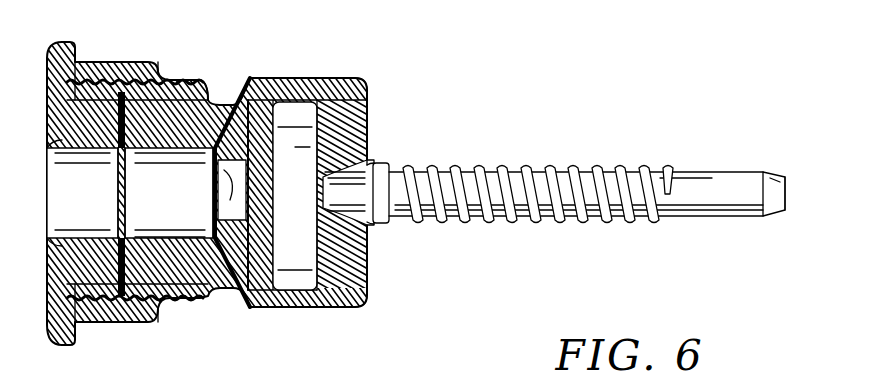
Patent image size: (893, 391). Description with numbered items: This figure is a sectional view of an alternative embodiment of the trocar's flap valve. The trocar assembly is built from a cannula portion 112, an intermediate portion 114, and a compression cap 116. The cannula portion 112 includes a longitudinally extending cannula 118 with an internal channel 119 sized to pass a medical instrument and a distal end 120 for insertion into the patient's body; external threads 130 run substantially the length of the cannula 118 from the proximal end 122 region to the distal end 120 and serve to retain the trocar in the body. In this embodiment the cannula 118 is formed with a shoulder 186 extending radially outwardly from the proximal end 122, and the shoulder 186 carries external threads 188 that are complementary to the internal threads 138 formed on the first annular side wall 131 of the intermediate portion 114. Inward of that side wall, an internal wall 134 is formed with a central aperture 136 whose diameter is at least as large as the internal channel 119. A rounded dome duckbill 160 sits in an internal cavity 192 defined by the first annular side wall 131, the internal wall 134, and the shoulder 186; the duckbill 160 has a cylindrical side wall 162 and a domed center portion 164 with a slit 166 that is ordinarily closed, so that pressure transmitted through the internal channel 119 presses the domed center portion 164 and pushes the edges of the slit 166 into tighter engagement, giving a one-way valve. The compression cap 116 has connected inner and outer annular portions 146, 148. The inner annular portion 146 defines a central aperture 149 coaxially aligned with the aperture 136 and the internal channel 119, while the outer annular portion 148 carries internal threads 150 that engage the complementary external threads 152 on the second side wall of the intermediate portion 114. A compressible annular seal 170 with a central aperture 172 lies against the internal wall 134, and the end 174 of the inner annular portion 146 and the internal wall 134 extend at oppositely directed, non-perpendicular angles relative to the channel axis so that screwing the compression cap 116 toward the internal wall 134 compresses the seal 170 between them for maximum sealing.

The cannula portion 112 is at (605, 166).
The intermediate portion 114 is at (227, 84).
The compression cap 116 is at (80, 57).
The cannula 118 is at (737, 170).
The internal channel 119 is at (355, 200).
The distal end 120 is at (784, 218).
The proximal end 122 is at (389, 228).
The external threads 130 is at (492, 170).
The first annular side wall 131 is at (278, 78).
The internal wall 134 is at (220, 270).
The central aperture 136 is at (227, 172).
The internal threads 138 is at (367, 107).
The inner annular portion 146 is at (87, 140).
The outer annular portion 148 is at (105, 316).
The central aperture 149 is at (88, 240).
The internal threads 150 is at (126, 66).
The external threads 152 is at (180, 84).
The rounded dome duckbill 160 is at (310, 290).
The cylindrical side wall 162 is at (292, 100).
The domed center portion 164 is at (364, 141).
The slit 166 is at (278, 175).
The compressible annular seal 170 is at (175, 278).
The central aperture 172 is at (138, 234).
The end 174 is at (212, 100).
The shoulder 186 is at (370, 262).
The external threads 188 is at (343, 97).
The internal cavity 192 is at (292, 245).